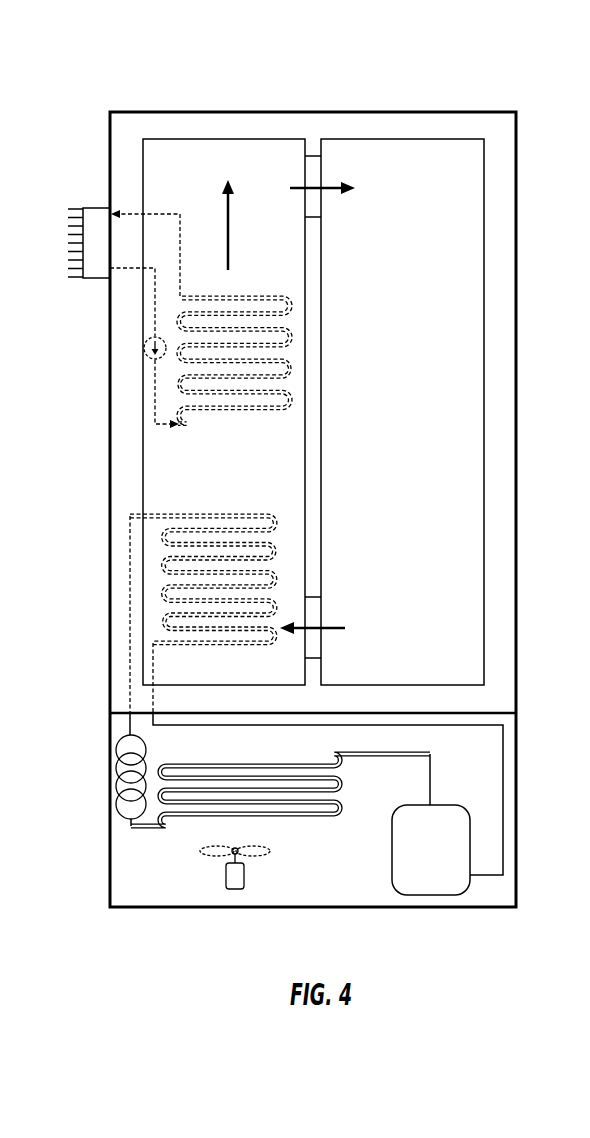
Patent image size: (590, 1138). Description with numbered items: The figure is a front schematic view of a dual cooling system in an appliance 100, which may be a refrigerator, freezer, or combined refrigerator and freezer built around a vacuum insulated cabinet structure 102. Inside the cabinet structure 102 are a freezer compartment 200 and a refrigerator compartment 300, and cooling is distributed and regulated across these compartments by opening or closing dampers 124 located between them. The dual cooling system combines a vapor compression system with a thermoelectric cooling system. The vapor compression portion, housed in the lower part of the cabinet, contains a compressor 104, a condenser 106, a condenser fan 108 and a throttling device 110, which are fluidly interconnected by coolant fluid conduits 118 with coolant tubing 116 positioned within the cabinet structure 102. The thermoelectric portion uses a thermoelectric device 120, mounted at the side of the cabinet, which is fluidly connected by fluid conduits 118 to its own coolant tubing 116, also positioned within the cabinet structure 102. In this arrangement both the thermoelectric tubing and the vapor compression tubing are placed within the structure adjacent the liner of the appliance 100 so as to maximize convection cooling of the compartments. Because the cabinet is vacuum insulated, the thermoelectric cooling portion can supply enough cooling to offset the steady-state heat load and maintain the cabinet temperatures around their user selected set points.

The appliance 100 is at (88, 79).
The vacuum insulated cabinet structure 102 is at (517, 282).
The compressor 104 is at (446, 857).
The condenser 106 is at (303, 828).
The condenser fan 108 is at (233, 890).
The throttling device 110 is at (117, 760).
The coolant tubing 116 is at (180, 400).
The coolant fluid conduits 118 is at (153, 320).
The thermoelectric device 120 is at (90, 213).
The dampers 124 is at (313, 172).
The freezer compartment 200 is at (248, 165).
The refrigerator compartment 300 is at (397, 178).